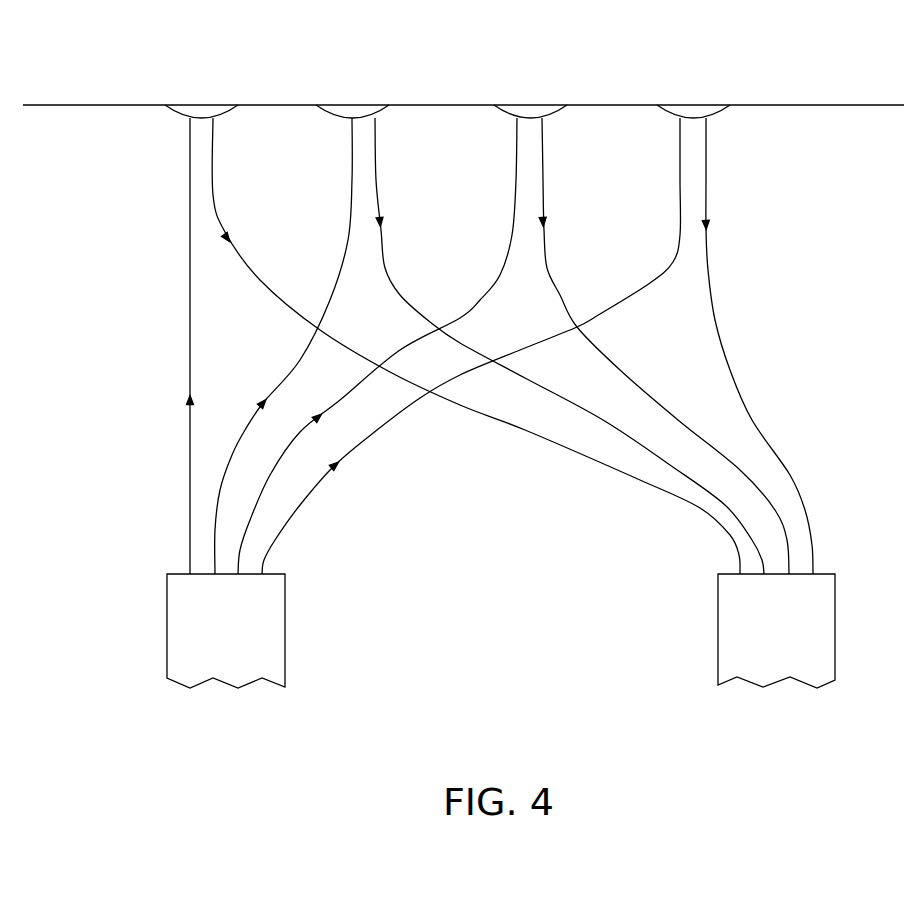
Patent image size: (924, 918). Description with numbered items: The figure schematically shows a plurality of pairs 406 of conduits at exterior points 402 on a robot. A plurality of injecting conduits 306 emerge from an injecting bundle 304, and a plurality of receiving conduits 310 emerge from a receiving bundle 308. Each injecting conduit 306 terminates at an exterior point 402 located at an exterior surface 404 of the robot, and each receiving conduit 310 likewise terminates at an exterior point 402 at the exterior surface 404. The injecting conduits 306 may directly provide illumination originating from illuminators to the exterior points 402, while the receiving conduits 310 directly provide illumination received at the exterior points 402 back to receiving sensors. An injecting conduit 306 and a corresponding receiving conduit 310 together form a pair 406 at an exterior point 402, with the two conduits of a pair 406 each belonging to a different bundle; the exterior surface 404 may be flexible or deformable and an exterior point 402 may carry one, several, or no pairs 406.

The injecting bundle 304 is at (167, 630).
The injecting conduit 306 is at (189, 475).
The receiving bundle 308 is at (836, 633).
The receiving conduit 310 is at (611, 470).
The exterior point 402 is at (205, 110).
The exterior surface 404 is at (815, 104).
The pair 406 is at (181, 135).